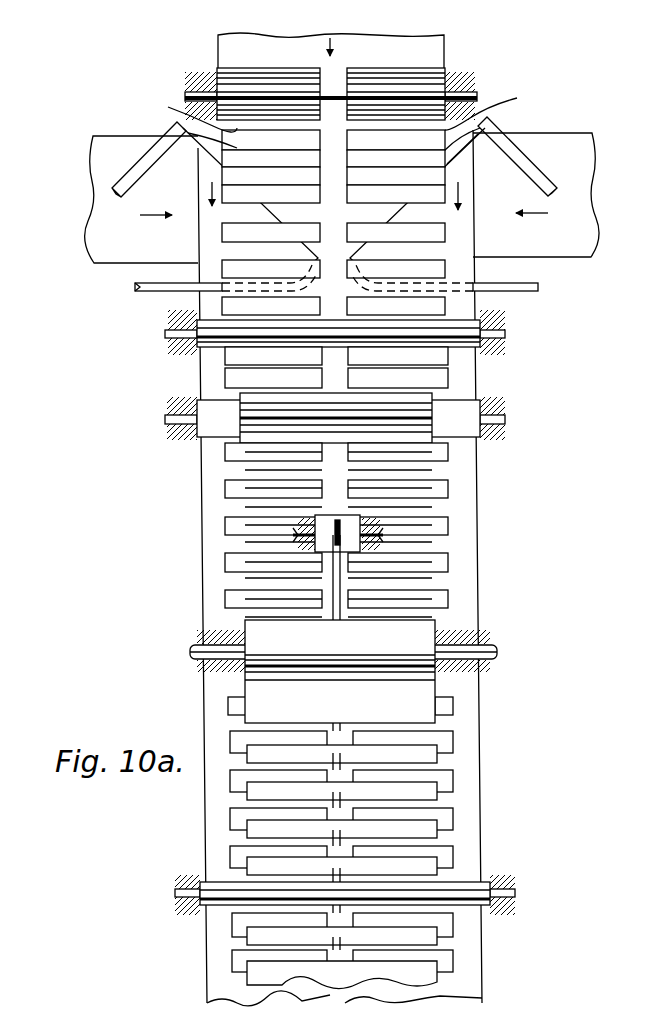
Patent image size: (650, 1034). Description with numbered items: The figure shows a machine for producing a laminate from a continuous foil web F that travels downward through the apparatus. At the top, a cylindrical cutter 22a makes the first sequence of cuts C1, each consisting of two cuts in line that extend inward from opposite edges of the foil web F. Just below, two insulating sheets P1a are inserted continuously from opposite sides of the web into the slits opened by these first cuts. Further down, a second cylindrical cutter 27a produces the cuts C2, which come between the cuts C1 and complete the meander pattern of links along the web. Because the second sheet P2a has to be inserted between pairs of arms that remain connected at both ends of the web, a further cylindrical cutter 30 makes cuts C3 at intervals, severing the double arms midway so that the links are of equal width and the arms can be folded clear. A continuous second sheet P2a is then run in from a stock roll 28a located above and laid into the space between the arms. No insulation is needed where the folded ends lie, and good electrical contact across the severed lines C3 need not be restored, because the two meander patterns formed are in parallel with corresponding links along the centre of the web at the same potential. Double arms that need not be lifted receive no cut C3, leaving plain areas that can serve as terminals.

The foil web F is at (427, 43).
The cylindrical cutter 22a is at (422, 85).
The first sequence of cuts C1 is at (344, 119).
The insulating sheets P1a is at (210, 265).
The cylindrical cutter 27a is at (450, 408).
The cuts C2 is at (420, 453).
The cylindrical cutter 30 is at (362, 548).
The cuts C3 is at (340, 607).
The stock roll 28a is at (405, 647).
The second sheet P2a is at (413, 710).